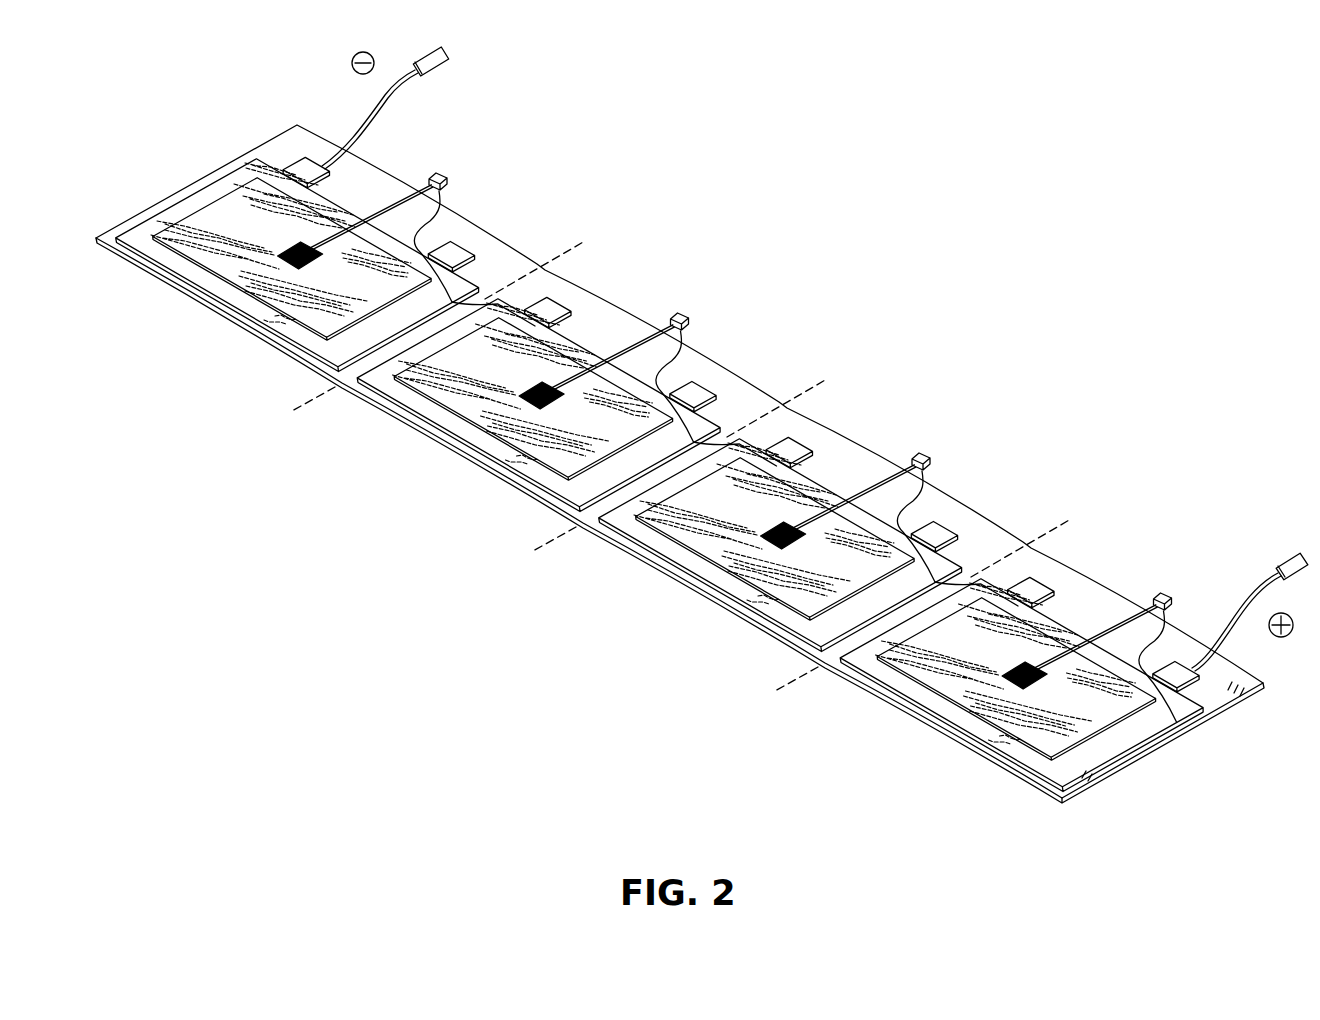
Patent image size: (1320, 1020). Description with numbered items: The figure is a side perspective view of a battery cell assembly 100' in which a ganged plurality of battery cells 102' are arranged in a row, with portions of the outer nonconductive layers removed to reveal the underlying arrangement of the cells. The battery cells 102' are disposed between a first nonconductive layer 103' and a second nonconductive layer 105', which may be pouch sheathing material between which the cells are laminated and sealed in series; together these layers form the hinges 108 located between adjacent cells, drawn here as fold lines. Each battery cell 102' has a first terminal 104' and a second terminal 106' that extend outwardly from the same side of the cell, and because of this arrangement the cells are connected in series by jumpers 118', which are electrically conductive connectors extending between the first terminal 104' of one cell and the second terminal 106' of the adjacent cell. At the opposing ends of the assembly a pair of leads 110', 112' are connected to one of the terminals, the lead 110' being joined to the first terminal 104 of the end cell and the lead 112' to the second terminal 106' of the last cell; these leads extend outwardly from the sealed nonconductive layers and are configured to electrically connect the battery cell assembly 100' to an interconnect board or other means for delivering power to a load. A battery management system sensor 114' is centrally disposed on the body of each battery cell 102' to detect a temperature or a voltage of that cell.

The battery cell assembly 100' is at (679, 461).
The battery cells 102' is at (659, 475).
The first nonconductive layer 103' is at (654, 443).
The first terminal 104 is at (308, 138).
The first terminal 104' is at (789, 446).
The second nonconductive layer 105' is at (680, 501).
The second terminal 106' is at (833, 435).
The hinge 108 is at (340, 392).
The lead 110' is at (418, 96).
The lead 112' is at (1250, 598).
The battery management system sensor 114' is at (588, 502).
The jumpers 118' is at (740, 447).